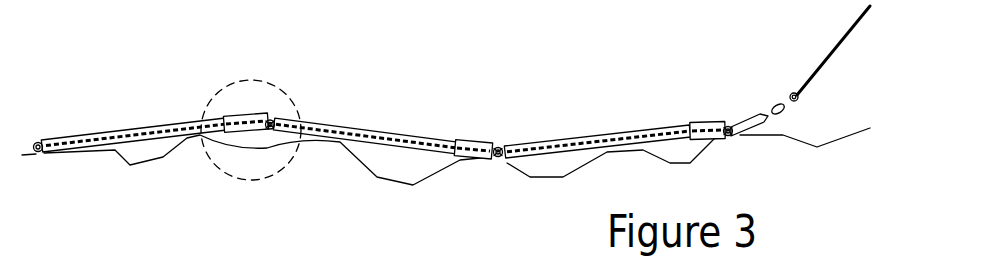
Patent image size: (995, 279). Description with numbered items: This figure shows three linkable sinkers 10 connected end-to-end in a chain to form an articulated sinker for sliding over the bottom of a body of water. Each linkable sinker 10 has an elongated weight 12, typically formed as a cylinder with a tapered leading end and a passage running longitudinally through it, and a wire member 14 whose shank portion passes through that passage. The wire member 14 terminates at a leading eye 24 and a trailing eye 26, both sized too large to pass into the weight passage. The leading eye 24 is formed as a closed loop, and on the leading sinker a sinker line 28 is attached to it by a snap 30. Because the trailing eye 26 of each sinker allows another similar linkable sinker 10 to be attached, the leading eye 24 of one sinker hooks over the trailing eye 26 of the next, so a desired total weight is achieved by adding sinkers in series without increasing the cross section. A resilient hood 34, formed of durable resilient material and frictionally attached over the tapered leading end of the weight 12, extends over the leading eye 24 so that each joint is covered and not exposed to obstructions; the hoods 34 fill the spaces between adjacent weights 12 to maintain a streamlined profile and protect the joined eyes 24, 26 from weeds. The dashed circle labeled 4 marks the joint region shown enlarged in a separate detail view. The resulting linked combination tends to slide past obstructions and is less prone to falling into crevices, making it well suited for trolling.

The detail view circle (FIG. 4) 4 is at (206, 111).
The linkable sinker 10 is at (114, 91).
The elongated weight 12 is at (94, 119).
The wire member 14 is at (152, 121).
The leading eye 24 is at (264, 128).
The trailing eye 26 is at (42, 165).
The sinker line 28 is at (820, 63).
The snap 30 is at (753, 113).
The resilient hood 34 is at (242, 107).